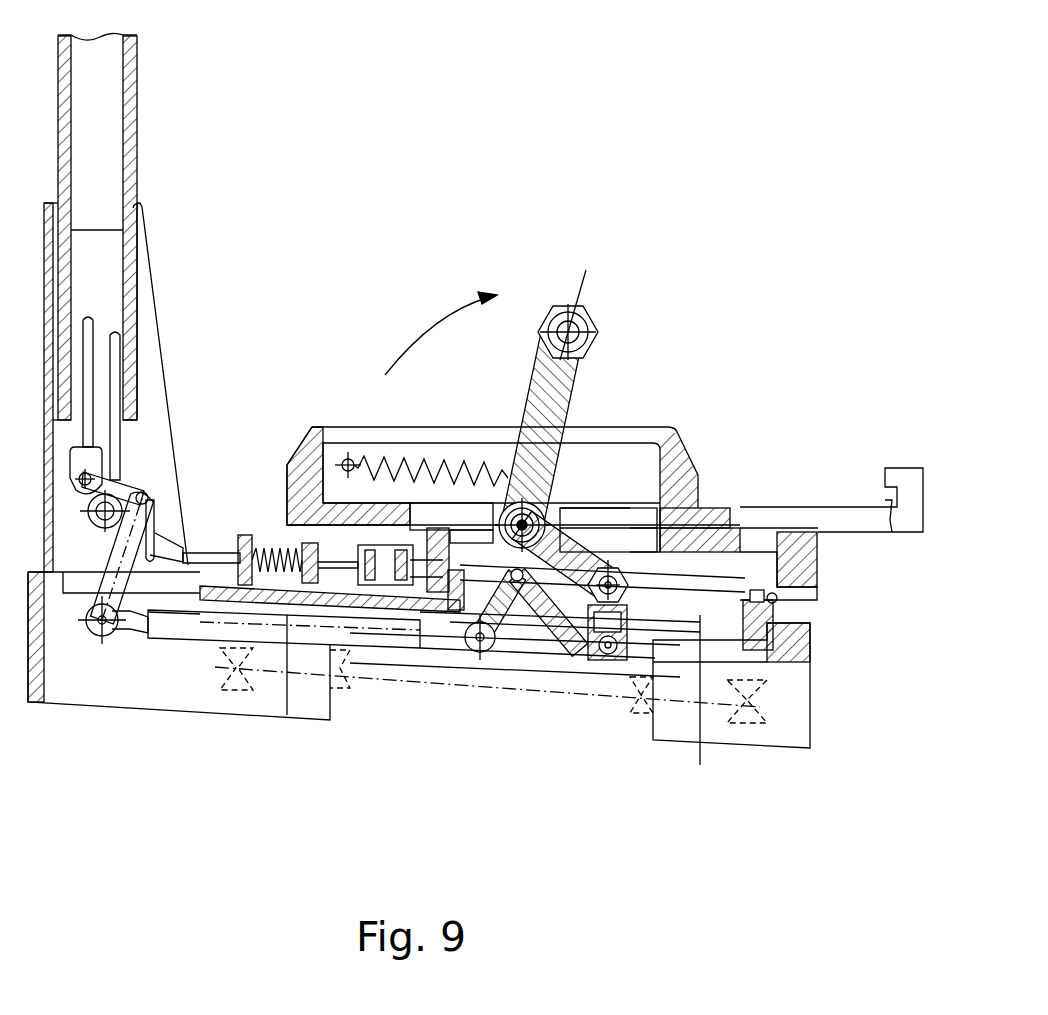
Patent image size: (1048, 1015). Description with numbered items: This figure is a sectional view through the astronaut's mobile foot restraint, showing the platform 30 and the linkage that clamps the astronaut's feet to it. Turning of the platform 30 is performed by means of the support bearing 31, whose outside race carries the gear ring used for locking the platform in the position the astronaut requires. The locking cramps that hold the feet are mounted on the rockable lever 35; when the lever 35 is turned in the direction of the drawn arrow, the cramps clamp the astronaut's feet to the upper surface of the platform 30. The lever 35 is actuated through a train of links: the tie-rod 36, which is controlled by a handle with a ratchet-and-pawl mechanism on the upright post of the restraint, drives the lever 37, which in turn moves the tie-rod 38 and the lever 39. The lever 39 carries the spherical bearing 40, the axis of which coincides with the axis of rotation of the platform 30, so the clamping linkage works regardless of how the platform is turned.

The platform 30 is at (838, 522).
The support bearing 31 is at (754, 655).
The rockable lever 35 is at (545, 400).
The tie-rod 36 is at (90, 346).
The lever 37 is at (160, 487).
The tie-rod 38 is at (198, 625).
The lever 39 is at (545, 633).
The spherical bearing 40 is at (603, 653).